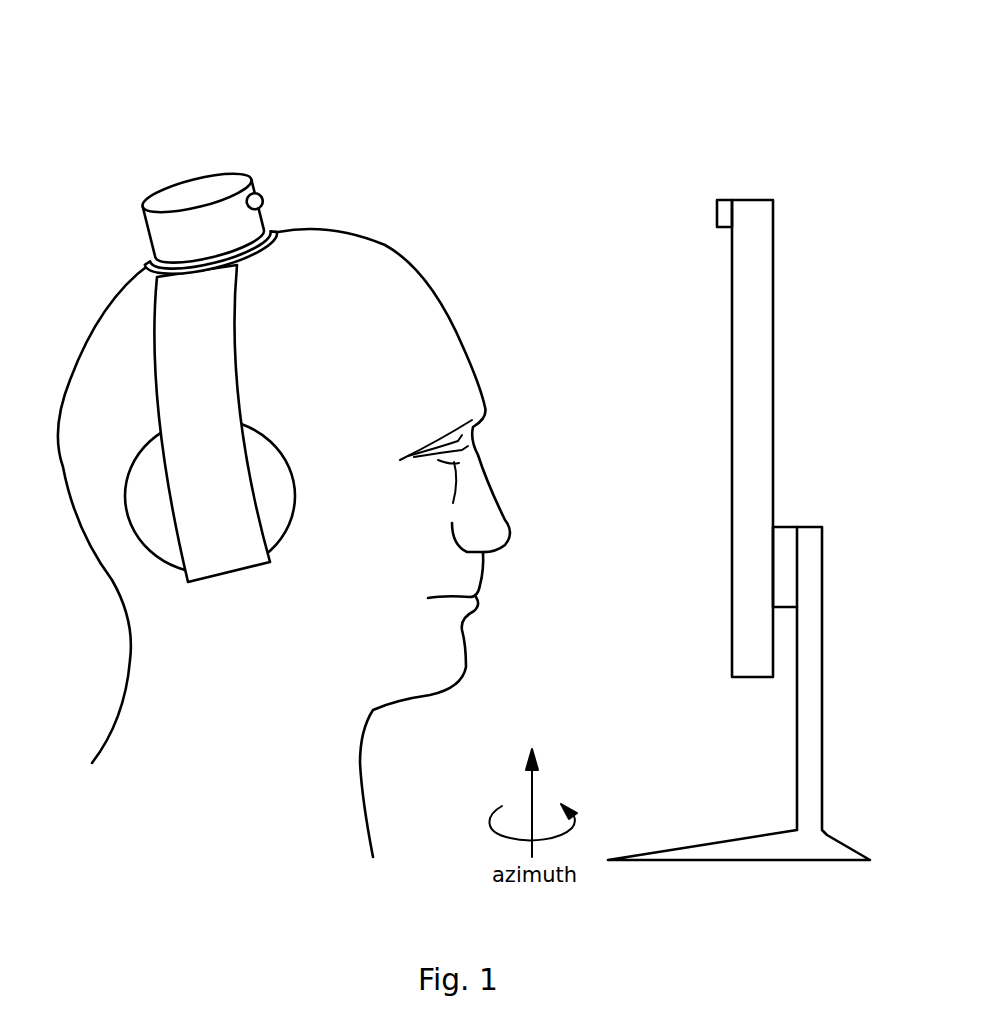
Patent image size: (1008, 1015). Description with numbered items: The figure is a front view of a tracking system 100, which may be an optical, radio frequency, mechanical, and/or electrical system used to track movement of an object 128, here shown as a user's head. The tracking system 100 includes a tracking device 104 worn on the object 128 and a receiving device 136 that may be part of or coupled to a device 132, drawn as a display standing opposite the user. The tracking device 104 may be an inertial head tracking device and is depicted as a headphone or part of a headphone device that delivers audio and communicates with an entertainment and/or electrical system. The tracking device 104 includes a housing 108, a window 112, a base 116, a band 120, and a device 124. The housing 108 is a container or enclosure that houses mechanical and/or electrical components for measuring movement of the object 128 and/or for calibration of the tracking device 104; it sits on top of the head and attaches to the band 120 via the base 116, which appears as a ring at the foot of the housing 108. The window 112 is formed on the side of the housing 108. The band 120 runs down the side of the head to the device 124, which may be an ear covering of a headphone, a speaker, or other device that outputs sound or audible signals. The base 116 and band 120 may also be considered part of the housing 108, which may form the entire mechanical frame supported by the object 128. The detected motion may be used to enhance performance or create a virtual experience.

The tracking system 100 is at (492, 64).
The tracking device 104 is at (212, 332).
The housing 108 is at (183, 190).
The window 112 is at (259, 213).
The base 116 is at (280, 238).
The band 120 is at (212, 340).
The device 124 is at (273, 485).
The object 128 is at (447, 305).
The device 132 is at (739, 493).
The receiving device 136 is at (722, 199).